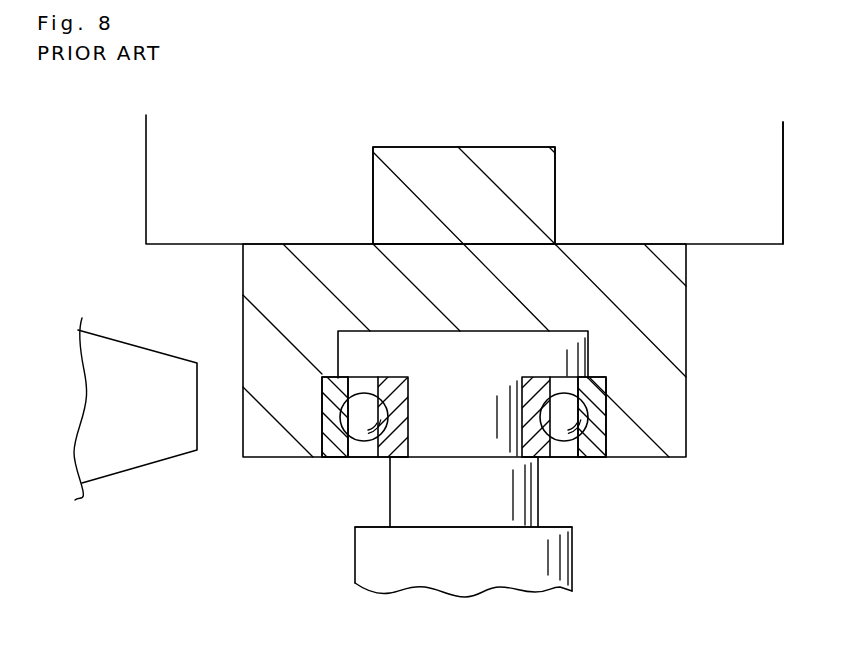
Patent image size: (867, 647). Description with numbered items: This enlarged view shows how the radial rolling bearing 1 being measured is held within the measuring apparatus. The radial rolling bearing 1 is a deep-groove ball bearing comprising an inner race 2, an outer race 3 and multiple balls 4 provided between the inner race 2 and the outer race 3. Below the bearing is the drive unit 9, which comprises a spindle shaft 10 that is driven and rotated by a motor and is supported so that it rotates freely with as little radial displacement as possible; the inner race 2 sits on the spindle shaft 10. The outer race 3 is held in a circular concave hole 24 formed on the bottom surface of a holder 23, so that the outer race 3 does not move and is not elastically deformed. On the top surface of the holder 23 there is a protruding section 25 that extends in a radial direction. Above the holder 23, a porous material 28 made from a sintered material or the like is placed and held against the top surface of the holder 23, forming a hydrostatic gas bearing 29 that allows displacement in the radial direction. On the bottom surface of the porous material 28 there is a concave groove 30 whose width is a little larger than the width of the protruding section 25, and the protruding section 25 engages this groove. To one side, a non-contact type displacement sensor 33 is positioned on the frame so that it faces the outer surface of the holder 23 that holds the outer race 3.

The radial rolling bearing 1 is at (596, 431).
The inner race 2 is at (539, 384).
The outer race 3 is at (600, 450).
The balls 4 is at (367, 437).
The drive unit 9 is at (347, 552).
The spindle shaft 10 is at (563, 555).
The holder 23 is at (648, 337).
The circular concave hole 24 is at (322, 413).
The protruding section 25 is at (538, 180).
The porous material 28 is at (750, 158).
The hydrostatic gas bearing 29 is at (753, 207).
The concave groove 30 is at (390, 148).
The non-contact type displacement sensor 33 is at (173, 447).